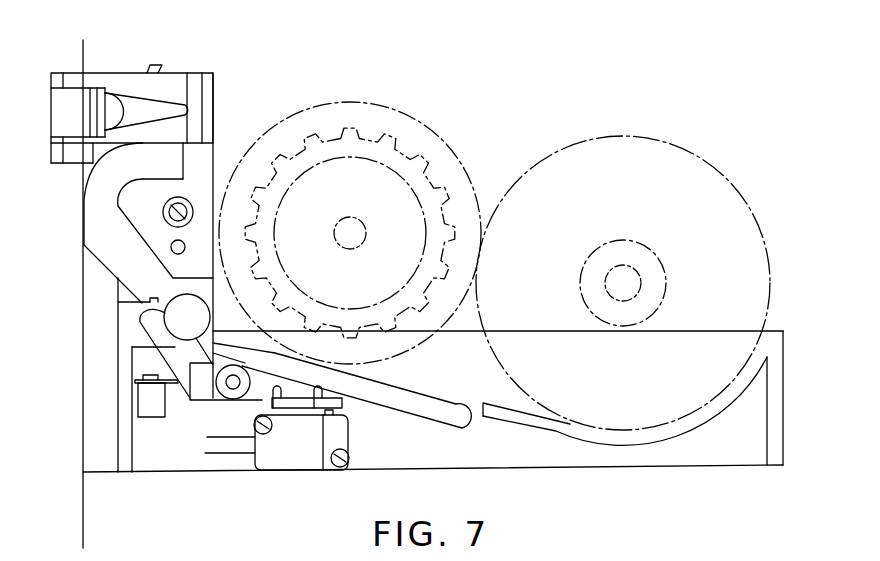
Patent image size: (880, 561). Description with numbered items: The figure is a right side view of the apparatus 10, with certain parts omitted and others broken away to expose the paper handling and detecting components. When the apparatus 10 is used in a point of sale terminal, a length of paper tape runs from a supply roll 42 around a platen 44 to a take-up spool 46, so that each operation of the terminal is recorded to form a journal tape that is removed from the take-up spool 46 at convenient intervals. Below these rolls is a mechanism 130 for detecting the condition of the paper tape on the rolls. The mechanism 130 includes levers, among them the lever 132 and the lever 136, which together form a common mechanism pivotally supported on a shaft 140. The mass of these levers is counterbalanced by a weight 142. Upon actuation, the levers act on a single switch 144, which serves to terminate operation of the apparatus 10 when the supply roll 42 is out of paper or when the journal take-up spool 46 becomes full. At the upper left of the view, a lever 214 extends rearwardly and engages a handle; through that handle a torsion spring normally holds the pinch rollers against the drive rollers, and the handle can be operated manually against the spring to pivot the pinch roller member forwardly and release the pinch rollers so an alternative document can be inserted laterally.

The apparatus 10 is at (274, 100).
The lever 214 is at (136, 110).
The platen 44 is at (98, 211).
The take-up spool 46 is at (362, 136).
The supply roll 42 is at (539, 163).
The lever 132 is at (175, 356).
The weight 142 is at (150, 405).
The shaft 140 is at (230, 387).
The mechanism 130 is at (383, 427).
The lever 136 is at (453, 414).
The switch 144 is at (288, 455).